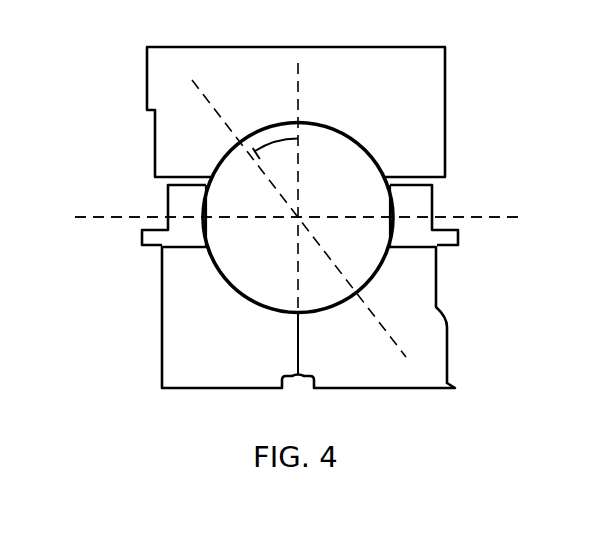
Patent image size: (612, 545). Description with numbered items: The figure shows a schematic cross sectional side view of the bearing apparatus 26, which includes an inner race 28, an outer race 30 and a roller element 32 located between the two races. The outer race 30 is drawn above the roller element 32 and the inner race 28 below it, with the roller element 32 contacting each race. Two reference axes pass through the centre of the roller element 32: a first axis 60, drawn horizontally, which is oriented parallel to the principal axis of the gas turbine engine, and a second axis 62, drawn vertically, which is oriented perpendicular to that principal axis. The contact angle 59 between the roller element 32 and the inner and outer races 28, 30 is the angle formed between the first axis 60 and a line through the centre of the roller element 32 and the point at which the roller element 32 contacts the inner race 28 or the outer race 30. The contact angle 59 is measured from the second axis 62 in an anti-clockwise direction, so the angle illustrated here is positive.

The bearing apparatus 26 is at (88, 327).
The inner race 28 is at (423, 365).
The outer race 30 is at (424, 160).
The roller element 32 is at (340, 157).
The contact angle 59 is at (276, 140).
The first axis 60 is at (495, 218).
The second axis 62 is at (302, 84).